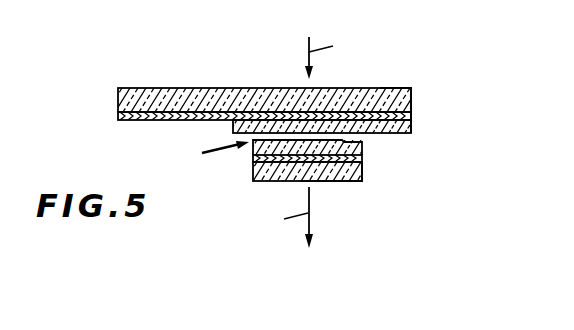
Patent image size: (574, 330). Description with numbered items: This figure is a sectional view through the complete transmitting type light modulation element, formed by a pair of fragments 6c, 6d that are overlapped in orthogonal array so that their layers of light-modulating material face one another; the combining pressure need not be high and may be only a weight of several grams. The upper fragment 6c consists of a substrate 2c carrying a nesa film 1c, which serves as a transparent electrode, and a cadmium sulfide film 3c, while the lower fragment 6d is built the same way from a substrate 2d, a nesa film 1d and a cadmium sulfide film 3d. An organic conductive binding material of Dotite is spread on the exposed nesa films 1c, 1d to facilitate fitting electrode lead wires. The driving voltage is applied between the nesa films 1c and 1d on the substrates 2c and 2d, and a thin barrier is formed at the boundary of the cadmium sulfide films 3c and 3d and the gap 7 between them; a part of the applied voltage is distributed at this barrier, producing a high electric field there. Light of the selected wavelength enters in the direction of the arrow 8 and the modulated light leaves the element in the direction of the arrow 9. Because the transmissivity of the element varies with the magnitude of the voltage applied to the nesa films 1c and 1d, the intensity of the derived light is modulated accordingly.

The substrate 2c is at (184, 97).
The nesa film 1c is at (411, 117).
The cadmium sulfide film 3c is at (411, 130).
The fragment 6c is at (398, 88).
The arrow 8 is at (330, 58).
The arrow 9 is at (289, 217).
The gap 7 is at (215, 152).
The cadmium sulfide film 3d is at (362, 159).
The nesa film 1d is at (334, 158).
The substrate 2d is at (253, 179).
The fragment 6d is at (355, 182).